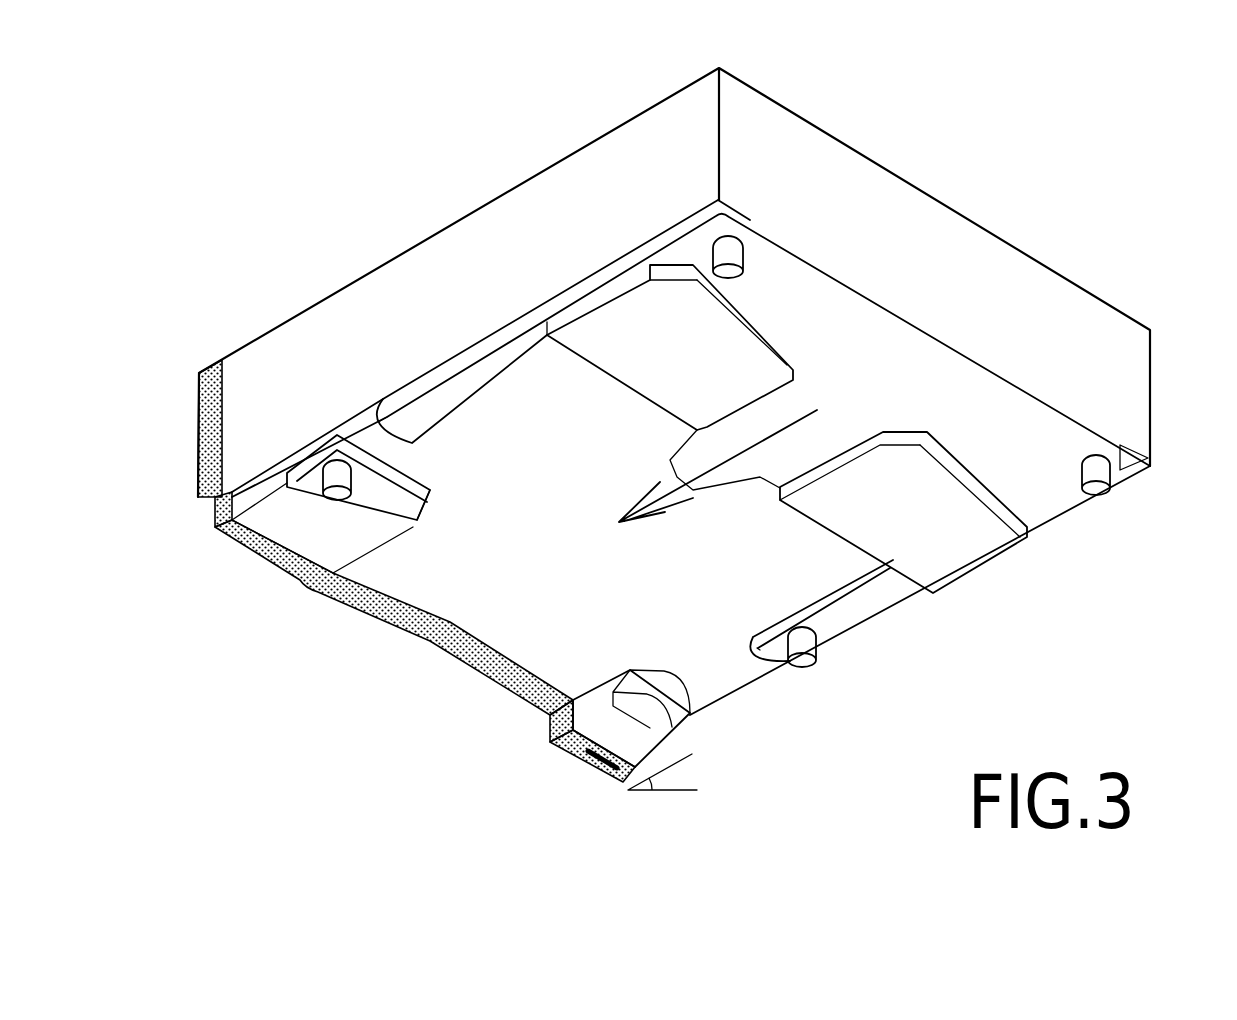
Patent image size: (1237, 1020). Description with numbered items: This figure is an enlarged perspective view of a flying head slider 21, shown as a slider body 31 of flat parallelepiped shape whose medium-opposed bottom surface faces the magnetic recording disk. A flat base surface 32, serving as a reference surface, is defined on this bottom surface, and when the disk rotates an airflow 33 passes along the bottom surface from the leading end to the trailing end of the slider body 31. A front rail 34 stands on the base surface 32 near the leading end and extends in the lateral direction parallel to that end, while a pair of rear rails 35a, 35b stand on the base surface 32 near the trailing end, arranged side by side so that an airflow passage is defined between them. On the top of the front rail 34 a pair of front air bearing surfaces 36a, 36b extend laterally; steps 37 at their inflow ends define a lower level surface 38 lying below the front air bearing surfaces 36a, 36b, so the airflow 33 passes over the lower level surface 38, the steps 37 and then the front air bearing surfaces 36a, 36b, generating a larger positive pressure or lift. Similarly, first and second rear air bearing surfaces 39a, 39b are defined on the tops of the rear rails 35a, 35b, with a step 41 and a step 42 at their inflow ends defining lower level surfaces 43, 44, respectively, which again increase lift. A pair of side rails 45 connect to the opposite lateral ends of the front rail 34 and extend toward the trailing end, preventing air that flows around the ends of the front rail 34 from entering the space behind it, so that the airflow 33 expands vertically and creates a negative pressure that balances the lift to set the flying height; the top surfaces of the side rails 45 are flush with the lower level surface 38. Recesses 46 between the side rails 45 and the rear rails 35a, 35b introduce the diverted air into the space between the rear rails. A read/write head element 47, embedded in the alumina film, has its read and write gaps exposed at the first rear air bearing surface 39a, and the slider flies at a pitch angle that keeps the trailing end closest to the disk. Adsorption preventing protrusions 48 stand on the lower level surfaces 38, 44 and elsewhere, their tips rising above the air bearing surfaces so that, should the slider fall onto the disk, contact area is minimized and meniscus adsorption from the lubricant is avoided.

The flying head slider 21 is at (404, 214).
The slider body 31 is at (1153, 356).
The base surface 32 is at (748, 690).
The airflow 33 is at (813, 408).
The front rail 34 is at (690, 232).
The rear rail 35a is at (553, 728).
The rear rail 35b is at (215, 516).
The front air bearing surface 36a is at (937, 534).
The front air bearing surface 36b is at (703, 366).
The step 37 is at (788, 353).
The lower level surface 38 is at (920, 348).
The first rear air bearing surface 39a is at (600, 735).
The second rear air bearing surface 39b is at (305, 540).
The step 41 is at (632, 705).
The step 42 is at (307, 490).
The lower level surface 43 is at (683, 718).
The lower level surface 44 is at (417, 503).
The side rail 45 is at (472, 404).
The recess 46 is at (380, 420).
The read/write head element 47 is at (598, 764).
The adsorption preventing protrusion 48 is at (738, 273).